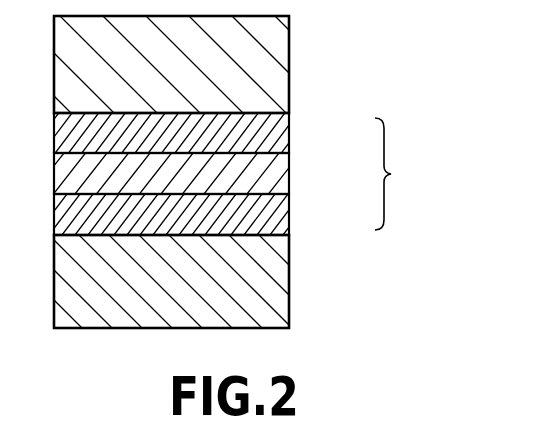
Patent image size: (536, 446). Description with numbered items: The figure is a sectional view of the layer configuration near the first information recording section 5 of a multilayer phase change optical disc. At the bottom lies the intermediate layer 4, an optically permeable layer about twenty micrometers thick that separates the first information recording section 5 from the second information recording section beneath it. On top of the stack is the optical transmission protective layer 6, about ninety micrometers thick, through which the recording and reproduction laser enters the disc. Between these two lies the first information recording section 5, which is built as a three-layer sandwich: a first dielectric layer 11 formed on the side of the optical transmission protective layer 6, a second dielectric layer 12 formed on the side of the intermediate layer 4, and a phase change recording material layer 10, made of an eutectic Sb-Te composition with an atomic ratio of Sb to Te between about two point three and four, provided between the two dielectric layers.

The intermediate layer 4 is at (274, 287).
The first information recording section 5 is at (394, 174).
The optical transmission protective layer 6 is at (277, 73).
The phase change recording material layer 10 is at (280, 174).
The first dielectric layer 11 is at (280, 133).
The second dielectric layer 12 is at (280, 216).